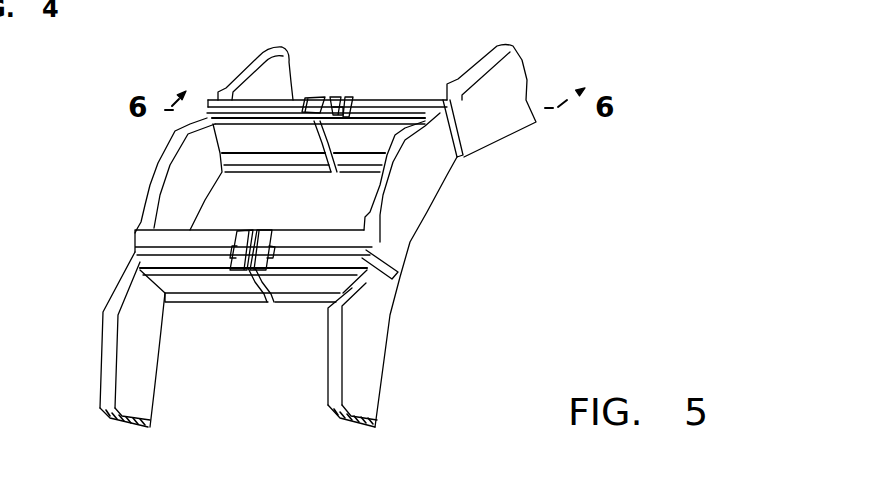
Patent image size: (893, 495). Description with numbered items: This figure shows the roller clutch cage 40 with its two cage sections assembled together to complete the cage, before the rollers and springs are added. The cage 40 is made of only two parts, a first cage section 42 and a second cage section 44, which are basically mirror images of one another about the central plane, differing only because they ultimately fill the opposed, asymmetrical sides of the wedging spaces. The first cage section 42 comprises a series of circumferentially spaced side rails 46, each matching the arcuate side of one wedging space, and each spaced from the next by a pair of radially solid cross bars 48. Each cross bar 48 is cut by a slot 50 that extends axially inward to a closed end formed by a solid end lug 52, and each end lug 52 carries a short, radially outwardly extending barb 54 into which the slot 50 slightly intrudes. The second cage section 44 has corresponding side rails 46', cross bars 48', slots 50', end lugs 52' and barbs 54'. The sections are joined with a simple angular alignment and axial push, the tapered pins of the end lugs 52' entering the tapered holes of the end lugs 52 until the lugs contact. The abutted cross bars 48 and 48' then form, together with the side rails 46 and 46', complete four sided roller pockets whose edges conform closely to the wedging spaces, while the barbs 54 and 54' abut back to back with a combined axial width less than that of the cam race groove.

The roller clutch cage 40 is at (437, 55).
The first cage section 42 is at (150, 182).
The second cage section 44 is at (433, 215).
The side rail 46 is at (97, 339).
The side rail 46' is at (396, 355).
The cross bar 48 is at (253, 227).
The cross bar 48' is at (339, 223).
The slot 50 is at (253, 140).
The slot 50' is at (469, 205).
The end lug 52 is at (292, 200).
The end lug 52' is at (365, 182).
The barb 54 is at (261, 193).
The barb 54' is at (303, 194).